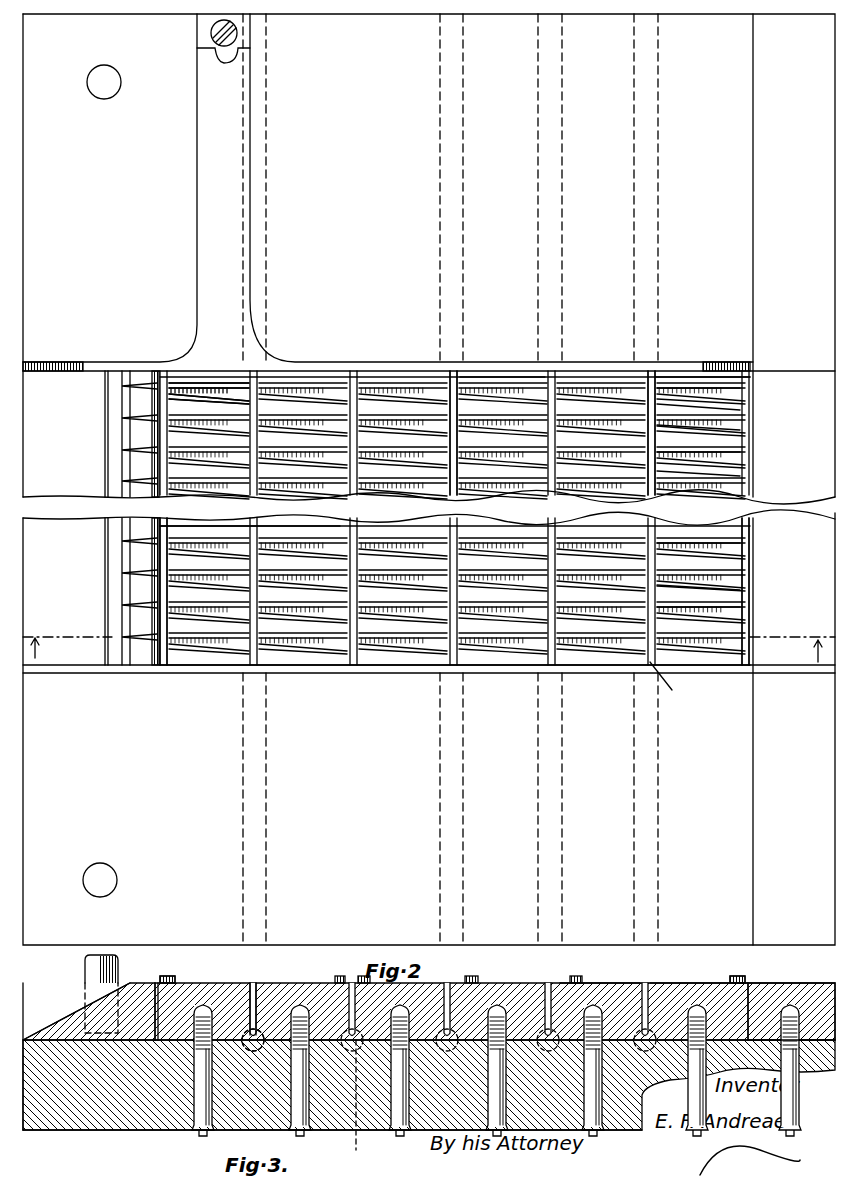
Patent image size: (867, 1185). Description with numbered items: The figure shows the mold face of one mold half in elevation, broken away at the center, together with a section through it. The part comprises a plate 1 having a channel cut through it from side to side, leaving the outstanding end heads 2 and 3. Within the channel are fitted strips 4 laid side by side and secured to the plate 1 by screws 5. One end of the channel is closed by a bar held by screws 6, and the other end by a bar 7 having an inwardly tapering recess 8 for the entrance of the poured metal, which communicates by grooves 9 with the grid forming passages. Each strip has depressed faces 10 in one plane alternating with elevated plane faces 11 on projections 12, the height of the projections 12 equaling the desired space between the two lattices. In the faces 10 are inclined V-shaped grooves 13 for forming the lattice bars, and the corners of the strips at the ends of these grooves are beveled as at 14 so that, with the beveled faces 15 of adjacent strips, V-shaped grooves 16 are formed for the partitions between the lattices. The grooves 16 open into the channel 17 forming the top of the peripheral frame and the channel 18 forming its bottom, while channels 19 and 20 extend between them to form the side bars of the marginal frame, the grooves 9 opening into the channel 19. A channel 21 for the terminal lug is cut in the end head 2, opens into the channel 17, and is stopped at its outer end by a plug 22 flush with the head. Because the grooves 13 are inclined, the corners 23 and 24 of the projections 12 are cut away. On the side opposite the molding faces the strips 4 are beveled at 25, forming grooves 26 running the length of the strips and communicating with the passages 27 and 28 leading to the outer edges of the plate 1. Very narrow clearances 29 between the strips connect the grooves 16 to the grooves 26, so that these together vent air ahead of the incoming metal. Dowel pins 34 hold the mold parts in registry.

In FIG. 3, the plate 1 is at (137, 1122).
In FIG. 2, the end head 2 is at (498, 236).
In FIG. 2, the end head 3 is at (429, 719).
In FIG. 2, the strips 4 is at (195, 410).
In FIG. 3, the screws 5 is at (600, 1010).
In FIG. 3, the screws 6 is at (800, 1010).
In FIG. 3, the bar 7 is at (133, 1003).
In FIG. 2, the recess 8 is at (66, 441).
In FIG. 3, the recess 8 is at (76, 1016).
In FIG. 2, the grooves 9 is at (122, 606).
In FIG. 3, the grooves 9 is at (150, 990).
In FIG. 2, the faces 10 is at (730, 428).
In FIG. 3, the faces 10 is at (575, 984).
In FIG. 2, the faces 11 is at (730, 407).
In FIG. 3, the faces 11 is at (598, 984).
In FIG. 3, the projections 12 is at (220, 984).
In FIG. 2, the grooves 13 is at (712, 383).
In FIG. 3, the beveled corners 14 is at (655, 985).
In FIG. 3, the beveled faces 15 is at (642, 985).
In FIG. 2, the grooves 16 is at (449, 372).
In FIG. 3, the grooves 16 is at (255, 985).
In FIG. 2, the channel 17 is at (482, 376).
In FIG. 2, the channel 18 is at (478, 670).
In FIG. 2, the channel 19 is at (157, 660).
In FIG. 3, the channel 19 is at (165, 984).
In FIG. 2, the channel 20 is at (747, 662).
In FIG. 3, the channel 20 is at (740, 984).
In FIG. 2, the channel 21 is at (223, 190).
In FIG. 2, the plug 22 is at (209, 40).
In FIG. 2, the corner 23 is at (752, 368).
In FIG. 2, the corner 24 is at (655, 392).
In FIG. 3, the beveled corners 25 is at (355, 1038).
In FIG. 3, the grooves 26 is at (252, 1045).
In FIG. 2, the passage 27 is at (538, 172).
In FIG. 3, the passage 27 is at (361, 1107).
In FIG. 2, the passage 28 is at (538, 746).
In FIG. 3, the clearances 29 is at (348, 984).
In FIG. 2, the dowel pins 34 is at (121, 90).